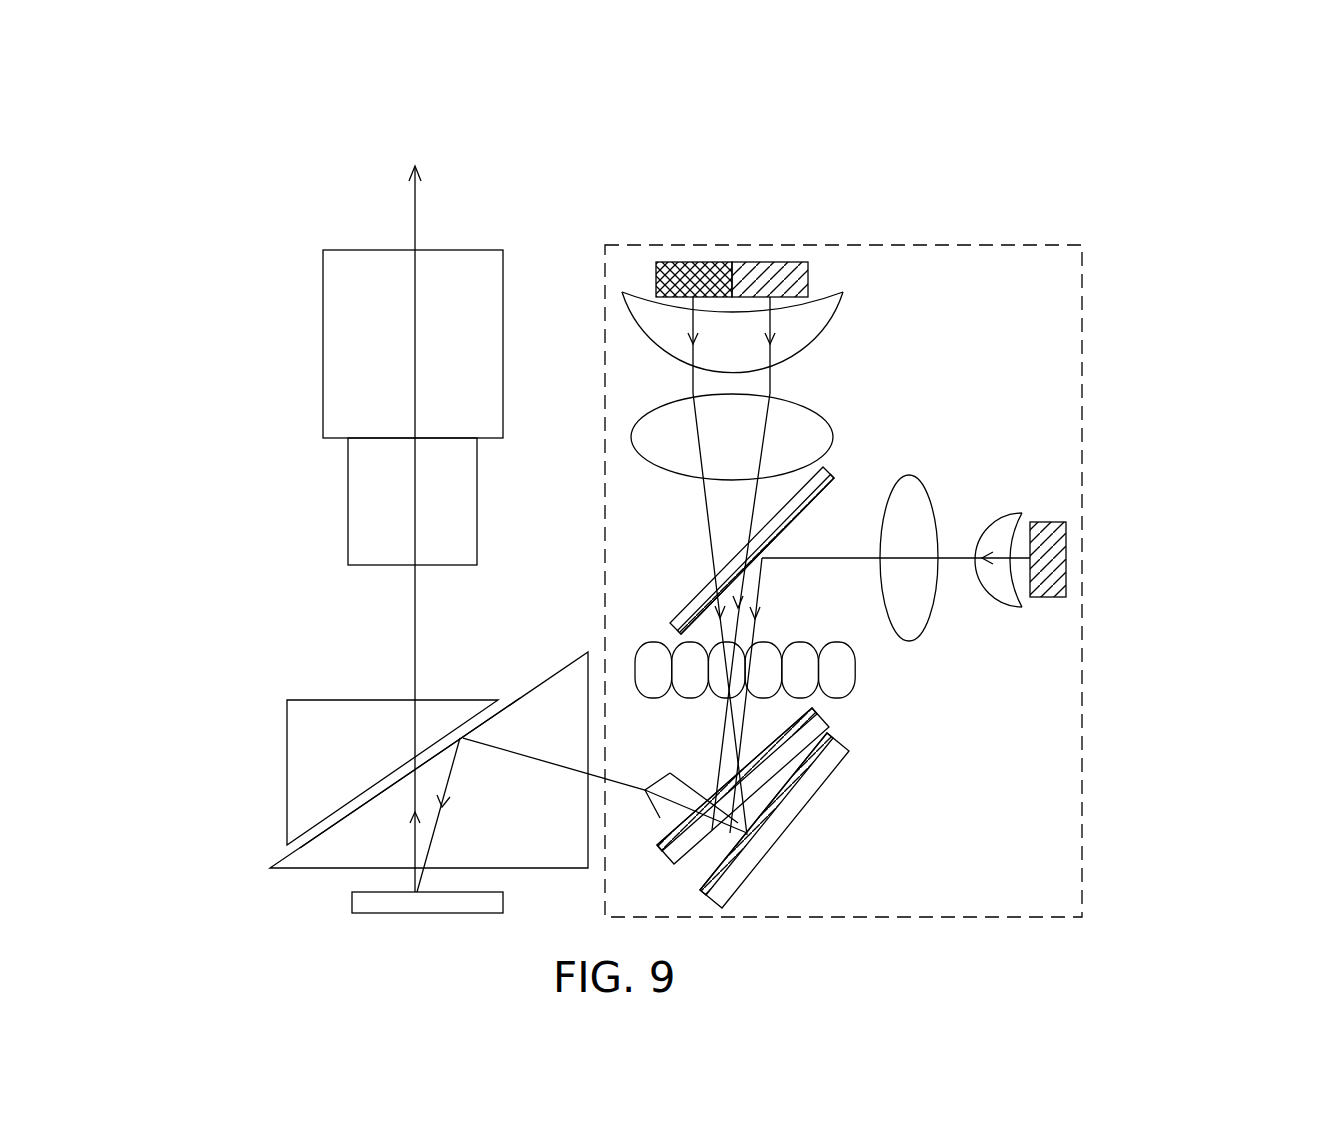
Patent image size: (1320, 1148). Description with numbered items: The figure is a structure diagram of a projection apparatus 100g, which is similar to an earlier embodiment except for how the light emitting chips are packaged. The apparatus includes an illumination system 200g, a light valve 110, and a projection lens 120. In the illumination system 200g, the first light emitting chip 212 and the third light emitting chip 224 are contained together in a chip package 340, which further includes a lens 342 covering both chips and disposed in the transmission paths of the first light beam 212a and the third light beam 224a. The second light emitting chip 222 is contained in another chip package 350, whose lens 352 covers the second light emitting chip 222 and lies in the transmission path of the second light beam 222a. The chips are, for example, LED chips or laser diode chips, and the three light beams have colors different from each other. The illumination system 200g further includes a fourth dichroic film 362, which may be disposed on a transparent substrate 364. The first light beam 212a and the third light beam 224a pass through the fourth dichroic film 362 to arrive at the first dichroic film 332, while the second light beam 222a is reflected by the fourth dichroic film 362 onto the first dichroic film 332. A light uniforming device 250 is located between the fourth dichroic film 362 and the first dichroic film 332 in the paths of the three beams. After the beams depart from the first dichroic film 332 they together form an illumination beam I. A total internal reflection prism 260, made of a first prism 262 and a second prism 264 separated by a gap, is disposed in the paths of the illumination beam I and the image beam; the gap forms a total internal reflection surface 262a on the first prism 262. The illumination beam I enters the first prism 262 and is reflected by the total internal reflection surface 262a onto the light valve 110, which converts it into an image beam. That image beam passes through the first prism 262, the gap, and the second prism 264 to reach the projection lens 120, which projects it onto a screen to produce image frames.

The projection apparatus 100g is at (1128, 935).
The light valve 110 is at (468, 906).
The projection lens 120 is at (335, 353).
The illumination system 200g is at (1084, 291).
The first light emitting chip 212 is at (778, 272).
The first light beam 212a is at (780, 378).
The second light emitting chip 222 is at (1048, 522).
The second light beam 222a is at (960, 558).
The third light emitting chip 224 is at (696, 262).
The third light beam 224a is at (690, 383).
The light uniforming device 250 is at (848, 665).
The total internal reflection prism 260 is at (373, 819).
The first prism 262 is at (307, 862).
The total internal reflection surface 262a is at (357, 803).
The second prism 264 is at (302, 764).
The first dichroic film 332 is at (813, 708).
The chip package 340 is at (767, 256).
The lens 342 is at (662, 190).
The chip package 350 is at (1091, 515).
The lens 352 is at (1003, 528).
The fourth dichroic film 362 is at (784, 513).
The transparent substrate 364 is at (829, 470).
The illumination beam I is at (547, 763).